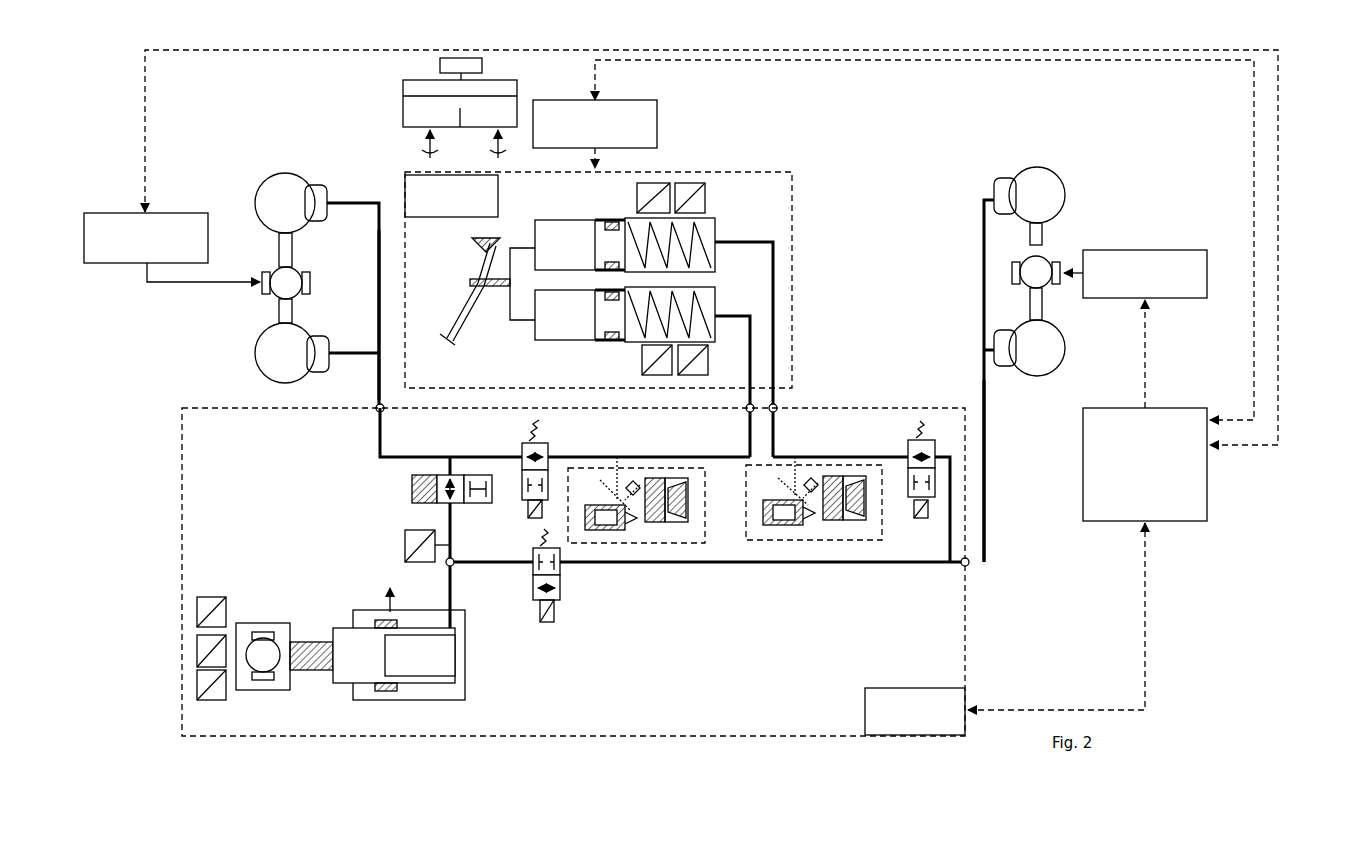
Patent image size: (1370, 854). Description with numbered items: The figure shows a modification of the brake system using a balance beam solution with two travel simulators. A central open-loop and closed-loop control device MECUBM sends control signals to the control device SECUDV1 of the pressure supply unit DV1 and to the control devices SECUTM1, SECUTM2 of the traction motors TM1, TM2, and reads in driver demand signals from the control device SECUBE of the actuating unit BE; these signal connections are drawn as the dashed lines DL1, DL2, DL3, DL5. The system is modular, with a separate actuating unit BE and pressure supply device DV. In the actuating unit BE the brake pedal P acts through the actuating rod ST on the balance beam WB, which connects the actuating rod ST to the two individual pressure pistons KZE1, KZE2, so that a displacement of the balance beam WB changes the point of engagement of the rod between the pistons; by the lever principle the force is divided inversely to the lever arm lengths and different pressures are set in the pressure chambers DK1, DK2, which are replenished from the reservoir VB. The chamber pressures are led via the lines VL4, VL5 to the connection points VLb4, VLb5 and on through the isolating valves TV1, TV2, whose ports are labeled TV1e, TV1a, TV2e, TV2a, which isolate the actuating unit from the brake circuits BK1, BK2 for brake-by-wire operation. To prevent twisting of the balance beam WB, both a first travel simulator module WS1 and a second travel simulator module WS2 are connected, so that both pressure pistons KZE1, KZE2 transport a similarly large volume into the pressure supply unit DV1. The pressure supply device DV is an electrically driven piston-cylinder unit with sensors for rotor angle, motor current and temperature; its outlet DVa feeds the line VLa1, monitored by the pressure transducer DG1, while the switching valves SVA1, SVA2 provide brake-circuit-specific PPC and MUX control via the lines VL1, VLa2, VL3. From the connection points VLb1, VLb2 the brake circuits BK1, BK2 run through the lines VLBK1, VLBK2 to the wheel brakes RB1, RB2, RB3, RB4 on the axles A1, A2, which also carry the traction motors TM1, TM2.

The data line DL1 is at (1147, 606).
The data line DL2 is at (1280, 340).
The data line DL3 is at (1179, 354).
The data line DL5 is at (1256, 222).
The open-loop and closed-loop control device of the traction motor SECUTM2 is at (146, 238).
The open-loop and closed-loop control device of the actuating unit SECUBE is at (531, 158).
The open-loop and closed-loop control device of the traction motor SECUTM1 is at (1145, 274).
The central open-loop and closed-loop control device MECUBM is at (1145, 464).
The open-loop and closed-loop control device of the pressure supply unit SECUDV1 is at (915, 711).
The traction motor 2 TM2 is at (258, 281).
The traction motor 1 TM1 is at (1040, 276).
The reservoir VB is at (518, 112).
The actuating unit BE is at (793, 190).
The brake pedal P is at (444, 332).
The actuating rod ST is at (503, 288).
The balance beam WB is at (517, 246).
The pressure piston KZE2 is at (560, 222).
The pressure piston KZE1 is at (563, 342).
The pressure chamber DK2 is at (700, 230).
The pressure chamber DK1 is at (700, 300).
The wheel brake 1 RB1 is at (314, 188).
The wheel brake 2 RB2 is at (330, 340).
The wheel brake 3 RB3 is at (1003, 180).
The wheel brake 4 RB4 is at (1000, 362).
The brake circuit 2 BK2 is at (366, 200).
The brake circuit 1 BK1 is at (982, 262).
The axle 2 A2 is at (280, 250).
The axle 1 A1 is at (1043, 250).
The connecting line brake circuit 2 VLBK2 is at (378, 281).
The connecting line brake circuit 1 VLBK1 is at (985, 480).
The connection point b2 VLb2 is at (361, 395).
The connection point b1 VLb1 is at (969, 566).
The connection point b4 VLb4 is at (745, 407).
The connection point b5 VLb5 is at (779, 410).
The connecting line 4 VL4 is at (776, 352).
The line VL5 is at (753, 395).
The connecting line 3 VL3 is at (846, 460).
The connecting line 1 VL1 is at (476, 456).
The connecting line a2 VLa2 is at (380, 458).
The connecting line a1 VLa1 is at (514, 566).
The pressure supply unit DV1 is at (182, 488).
The pressure supply device DV is at (460, 688).
The pressure supply outlet DVa is at (454, 560).
The pressure transducer DG1 is at (405, 535).
The isolating valve TV1 is at (522, 450).
The isolating valve 1 inlet TV1e is at (548, 455).
The isolating valve 1 outlet TV1a is at (522, 462).
The isolating valve TV2 is at (920, 438).
The isolating valve 2 inlet TV2e is at (908, 455).
The isolating valve 2 outlet TV2a is at (936, 458).
The switching valve SVA1 is at (468, 508).
The switching valve SVA2 is at (562, 590).
The first travel simulator module WS1 is at (660, 478).
The second travel simulator module WS2 is at (843, 542).